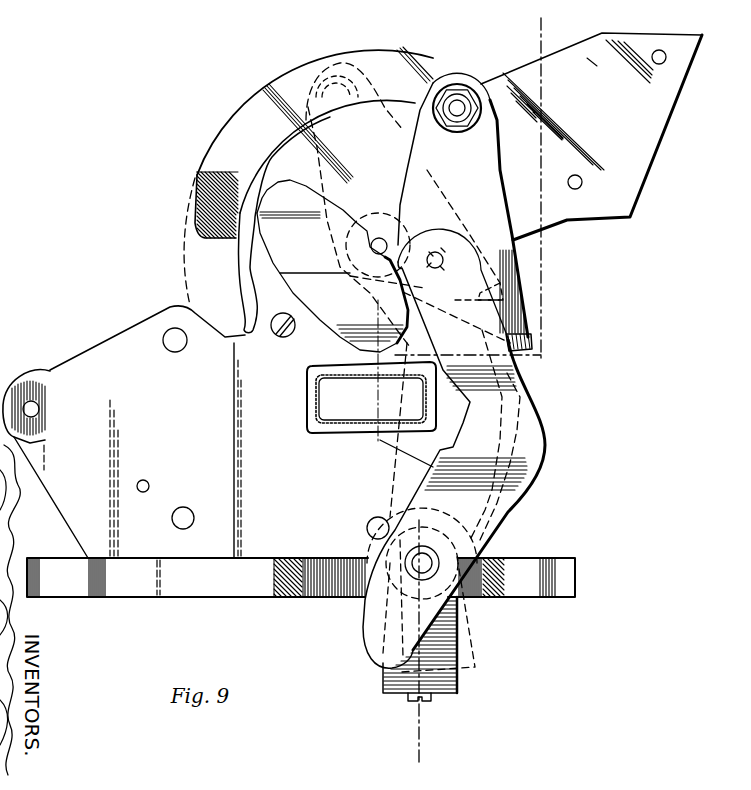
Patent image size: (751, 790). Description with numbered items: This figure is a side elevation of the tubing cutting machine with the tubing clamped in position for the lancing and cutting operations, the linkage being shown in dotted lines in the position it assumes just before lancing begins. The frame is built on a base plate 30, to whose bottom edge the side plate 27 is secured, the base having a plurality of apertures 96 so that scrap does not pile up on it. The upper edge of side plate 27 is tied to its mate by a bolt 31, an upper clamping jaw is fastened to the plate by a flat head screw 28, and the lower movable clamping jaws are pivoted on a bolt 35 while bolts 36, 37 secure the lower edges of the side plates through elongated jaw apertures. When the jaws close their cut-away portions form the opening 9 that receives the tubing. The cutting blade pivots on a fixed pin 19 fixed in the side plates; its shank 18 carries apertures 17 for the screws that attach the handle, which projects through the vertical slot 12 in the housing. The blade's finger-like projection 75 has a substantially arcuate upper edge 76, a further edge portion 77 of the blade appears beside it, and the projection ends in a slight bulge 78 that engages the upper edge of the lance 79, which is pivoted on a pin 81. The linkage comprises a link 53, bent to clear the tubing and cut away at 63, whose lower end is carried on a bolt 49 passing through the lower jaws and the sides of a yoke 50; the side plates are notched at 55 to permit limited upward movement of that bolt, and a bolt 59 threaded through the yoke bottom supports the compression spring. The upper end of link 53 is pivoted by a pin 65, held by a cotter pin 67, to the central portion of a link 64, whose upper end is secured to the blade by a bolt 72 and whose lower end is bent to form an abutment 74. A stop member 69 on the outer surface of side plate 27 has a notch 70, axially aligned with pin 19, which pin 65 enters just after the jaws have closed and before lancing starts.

The opening 9 is at (352, 434).
The vertical slot 12 is at (518, 31).
The apertures 17 is at (666, 58).
The shank 18 is at (640, 126).
The pin 19 is at (373, 260).
The side plate 27 is at (110, 353).
The flat head screw 28 is at (277, 338).
The base plate 30 is at (130, 598).
The bolt 31 is at (175, 353).
The bolt 35 is at (150, 486).
The bolt 36 is at (192, 516).
The bolt 37 is at (376, 517).
The bolt 49 is at (422, 562).
The yoke 50 is at (460, 638).
The link 53 is at (545, 455).
The notch 55 is at (438, 520).
The bolt 59 is at (432, 700).
The cut away portion 63 is at (458, 440).
The link 64 is at (497, 252).
The pin 65 is at (474, 284).
The cotter pin 67 is at (437, 251).
The stop member 69 is at (328, 317).
The notch 70 is at (379, 215).
The bolt 72 is at (458, 105).
The abutment 74 is at (527, 343).
The finger-like projection 75 is at (268, 136).
The upper edge 76 is at (197, 223).
The finger 77 is at (219, 243).
The bulge 78 is at (196, 252).
The lance 79 is at (31, 372).
The pin 81 is at (40, 409).
The apertures 96 is at (318, 598).